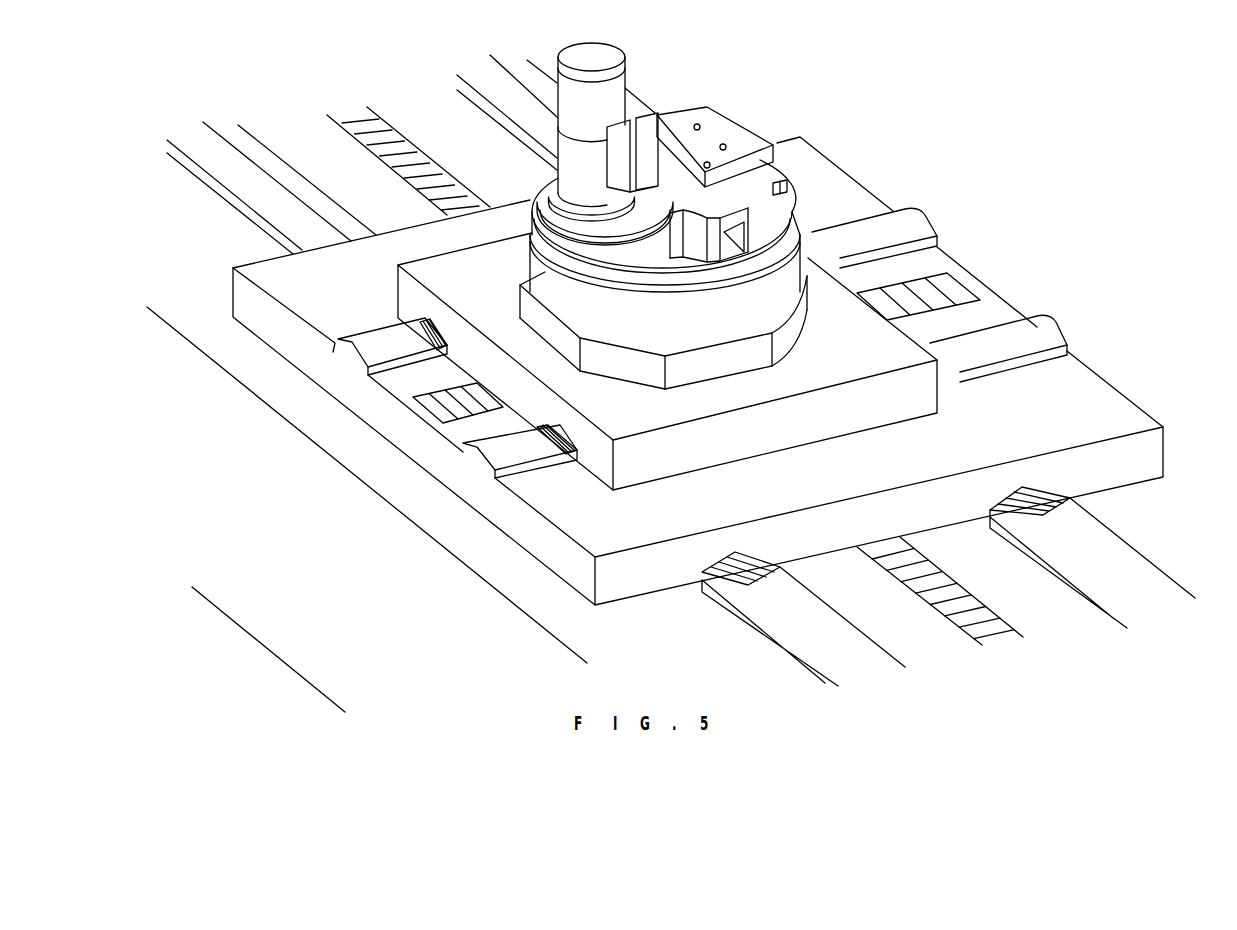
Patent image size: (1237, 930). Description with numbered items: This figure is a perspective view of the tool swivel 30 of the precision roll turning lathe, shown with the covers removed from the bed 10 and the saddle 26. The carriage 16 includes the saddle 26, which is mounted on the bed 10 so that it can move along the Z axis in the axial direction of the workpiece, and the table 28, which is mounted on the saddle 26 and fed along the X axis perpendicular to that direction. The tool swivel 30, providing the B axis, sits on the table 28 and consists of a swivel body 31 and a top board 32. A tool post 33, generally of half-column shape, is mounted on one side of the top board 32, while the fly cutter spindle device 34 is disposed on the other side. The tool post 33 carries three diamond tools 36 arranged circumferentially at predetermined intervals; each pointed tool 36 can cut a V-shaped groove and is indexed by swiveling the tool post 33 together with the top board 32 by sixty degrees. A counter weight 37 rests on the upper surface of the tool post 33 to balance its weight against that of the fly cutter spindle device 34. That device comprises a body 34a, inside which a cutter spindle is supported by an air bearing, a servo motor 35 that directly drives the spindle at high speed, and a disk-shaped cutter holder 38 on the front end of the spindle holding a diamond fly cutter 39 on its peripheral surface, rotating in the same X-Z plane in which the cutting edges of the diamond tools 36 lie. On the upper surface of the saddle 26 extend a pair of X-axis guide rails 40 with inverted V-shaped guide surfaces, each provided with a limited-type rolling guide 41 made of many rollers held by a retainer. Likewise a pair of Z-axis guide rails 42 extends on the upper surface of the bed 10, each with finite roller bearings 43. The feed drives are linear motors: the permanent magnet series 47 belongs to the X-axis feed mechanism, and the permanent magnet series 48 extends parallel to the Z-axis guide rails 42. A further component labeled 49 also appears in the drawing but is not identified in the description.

The bed 10 is at (372, 465).
The carriage 16 is at (698, 367).
The saddle 26 is at (1085, 388).
The table 28 is at (925, 412).
The tool swivel 30 is at (645, 248).
The swivel body 31 is at (770, 300).
The top board 32 is at (553, 188).
The tool post 33 is at (745, 190).
The fly cutter spindle device 34 is at (578, 117).
The body 34a is at (563, 146).
The servo motor 35 is at (558, 82).
The diamond tools 36 is at (792, 190).
The counter weight 37 is at (735, 122).
The cutter holder 38 is at (592, 214).
The fly cutter 39 is at (567, 212).
The X-axis guide rails 40 is at (387, 338).
The limited-type rolling guide 41 is at (440, 340).
The Z-axis guide rails 42 is at (812, 594).
The finite roller bearings 43 is at (715, 563).
The permanent magnet series 47 is at (490, 392).
The permanent magnet series 48 is at (968, 584).
The bracket 49 is at (638, 110).